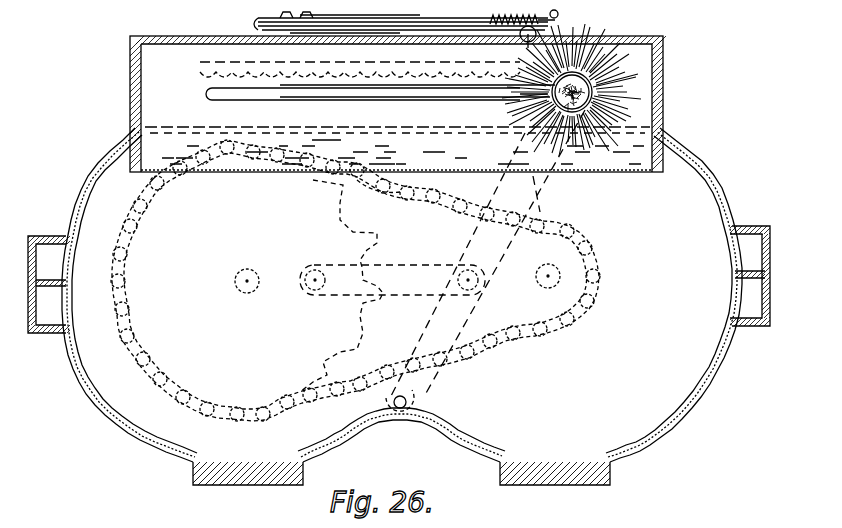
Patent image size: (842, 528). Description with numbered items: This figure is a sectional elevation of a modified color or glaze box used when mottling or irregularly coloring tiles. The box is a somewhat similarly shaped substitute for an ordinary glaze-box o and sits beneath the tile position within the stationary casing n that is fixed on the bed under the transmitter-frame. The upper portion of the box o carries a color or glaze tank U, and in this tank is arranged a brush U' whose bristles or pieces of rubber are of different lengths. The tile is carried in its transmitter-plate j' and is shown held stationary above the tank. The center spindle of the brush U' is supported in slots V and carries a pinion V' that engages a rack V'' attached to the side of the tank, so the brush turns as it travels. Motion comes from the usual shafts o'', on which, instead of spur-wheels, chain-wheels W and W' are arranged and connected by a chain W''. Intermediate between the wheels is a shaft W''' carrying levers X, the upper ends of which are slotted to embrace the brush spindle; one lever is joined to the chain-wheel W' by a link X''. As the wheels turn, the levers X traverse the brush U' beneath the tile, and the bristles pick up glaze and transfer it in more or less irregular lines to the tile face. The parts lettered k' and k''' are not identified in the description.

The stationary casing n is at (88, 178).
The glaze-box o is at (399, 337).
The color or glaze tank U is at (407, 113).
The brush U' is at (563, 38).
The slots V is at (363, 81).
The pinion V' is at (417, 100).
The rack V'' is at (360, 61).
The transmitter-plate j' is at (381, 23).
The spring k' is at (547, 30).
The brush wheel k''' is at (546, 90).
The chain-wheel W is at (355, 280).
The chain-wheel W' is at (331, 285).
The chain W'' is at (381, 201).
The shaft W''' is at (421, 403).
The levers X is at (485, 255).
The link X'' is at (392, 290).
The shafts o'' is at (394, 293).